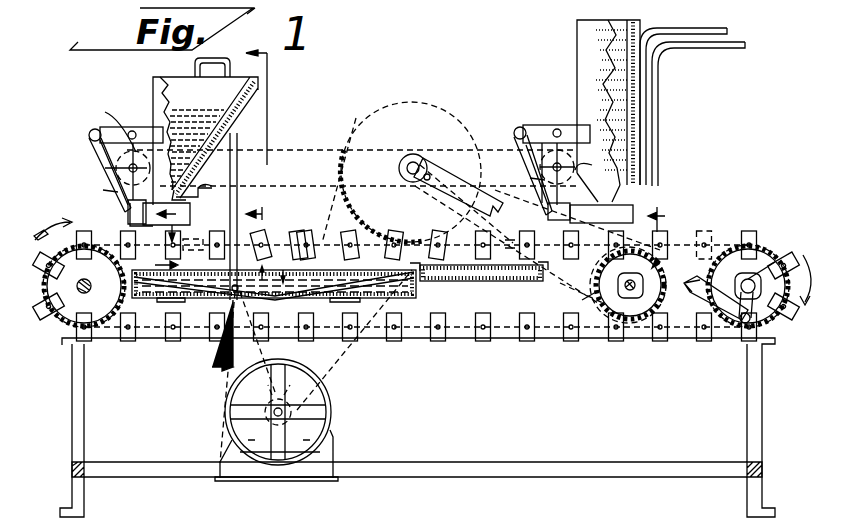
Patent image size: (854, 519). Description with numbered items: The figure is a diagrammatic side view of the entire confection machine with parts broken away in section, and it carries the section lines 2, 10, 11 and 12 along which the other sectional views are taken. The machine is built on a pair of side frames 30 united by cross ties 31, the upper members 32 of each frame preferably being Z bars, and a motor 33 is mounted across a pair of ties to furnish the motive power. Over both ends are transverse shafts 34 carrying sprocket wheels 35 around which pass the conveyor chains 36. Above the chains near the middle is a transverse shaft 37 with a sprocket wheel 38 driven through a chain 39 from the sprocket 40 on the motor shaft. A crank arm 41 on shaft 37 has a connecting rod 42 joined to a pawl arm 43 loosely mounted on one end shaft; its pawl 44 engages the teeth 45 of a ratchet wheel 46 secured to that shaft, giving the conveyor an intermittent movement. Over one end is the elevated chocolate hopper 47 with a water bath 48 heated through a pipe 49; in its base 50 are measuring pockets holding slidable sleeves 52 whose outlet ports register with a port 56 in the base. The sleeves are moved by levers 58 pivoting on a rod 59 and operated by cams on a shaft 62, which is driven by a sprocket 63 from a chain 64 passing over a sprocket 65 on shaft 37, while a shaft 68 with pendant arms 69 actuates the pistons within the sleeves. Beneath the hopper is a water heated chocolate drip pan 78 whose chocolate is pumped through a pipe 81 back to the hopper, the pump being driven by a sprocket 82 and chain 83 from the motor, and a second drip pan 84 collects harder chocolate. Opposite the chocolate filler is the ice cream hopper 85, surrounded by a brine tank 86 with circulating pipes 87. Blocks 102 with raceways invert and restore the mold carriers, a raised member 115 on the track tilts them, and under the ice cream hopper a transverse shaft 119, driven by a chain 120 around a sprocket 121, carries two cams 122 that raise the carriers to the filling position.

The section line 2— 2 is at (233, 205).
The section line 10— 10 is at (165, 240).
The section line 11— 11 is at (265, 244).
The section line 12— 12 is at (664, 241).
The side frames 30 is at (762, 412).
The cross ties 31 is at (664, 462).
The upper members 32 is at (598, 340).
The motor 33 is at (332, 404).
The transverse shafts 34 is at (82, 293).
The sprocket wheels 35 is at (110, 330).
The conveyor chains 36 is at (148, 332).
The transverse shaft 37 is at (418, 158).
The sprocket wheel 38 is at (386, 120).
The chain 39 is at (335, 357).
The sprocket 40 is at (268, 400).
The crank arm 41 is at (432, 135).
The connecting rod 42 is at (455, 148).
The pawl arm 43 is at (755, 312).
The pawl 44 is at (727, 334).
The teeth 45 is at (770, 262).
The ratchet wheel 46 is at (757, 270).
The chocolate hopper 47 is at (153, 80).
The water bath 48 is at (250, 98).
The pipe 49 is at (195, 198).
The base 50 is at (143, 225).
The sleeve 52 is at (130, 222).
The port 56 is at (107, 6).
The levers 58 is at (349, 136).
The rod 59 is at (132, 131).
The shaft 62 is at (115, 167).
The sprocket 63 is at (120, 175).
The chain 64 is at (287, 150).
The sprocket 65 is at (400, 165).
The shaft 68 is at (89, 135).
The pendant arms 69 is at (110, 194).
The chocolate drip pan 78 is at (302, 280).
The pipe 81 is at (238, 165).
The sprocket 82 is at (226, 272).
The chain 83 is at (232, 372).
The second drip pan 84 is at (478, 284).
The ice cream hopper 85 is at (582, 32).
The brine tank 86 is at (645, 30).
The circulating pipes 87 is at (700, 46).
The block 102 is at (565, 270).
The raised member 115 is at (290, 240).
The transverse shaft 119 is at (628, 300).
The chain 120 is at (590, 300).
The sprocket 121 is at (583, 305).
The cams 122 is at (636, 298).